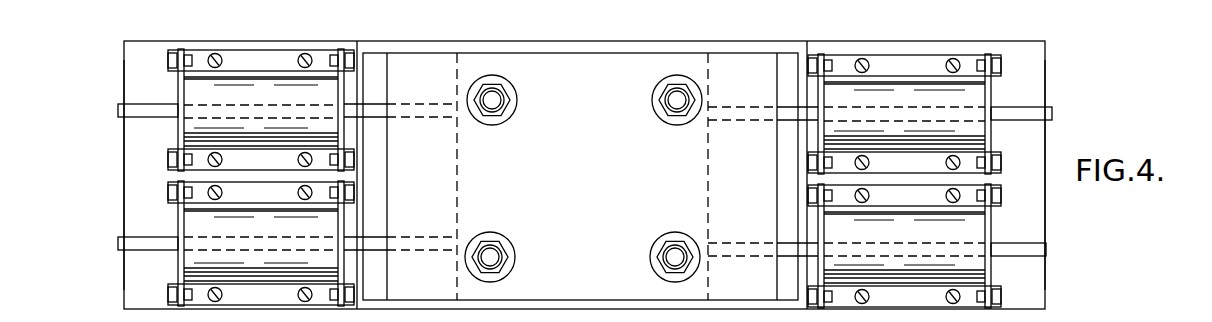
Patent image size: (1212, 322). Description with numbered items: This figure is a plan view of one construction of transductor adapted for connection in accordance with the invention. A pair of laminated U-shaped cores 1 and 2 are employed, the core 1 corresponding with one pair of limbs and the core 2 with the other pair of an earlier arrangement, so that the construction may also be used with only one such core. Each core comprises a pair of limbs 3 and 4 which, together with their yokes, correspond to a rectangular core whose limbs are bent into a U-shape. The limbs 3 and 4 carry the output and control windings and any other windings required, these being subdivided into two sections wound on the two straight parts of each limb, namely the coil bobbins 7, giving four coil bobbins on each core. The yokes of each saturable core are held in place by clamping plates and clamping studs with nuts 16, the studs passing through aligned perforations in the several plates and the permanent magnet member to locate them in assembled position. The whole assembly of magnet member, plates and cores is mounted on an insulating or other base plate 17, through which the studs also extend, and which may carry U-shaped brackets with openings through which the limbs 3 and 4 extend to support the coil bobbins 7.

The U-shaped core 1 is at (98, 284).
The U-shaped core 2 is at (1078, 290).
The limb 3 is at (118, 243).
The limb 4 is at (118, 111).
The coil bobbins 7 is at (192, 90).
The nuts 16 is at (656, 100).
The base plate 17 is at (136, 69).